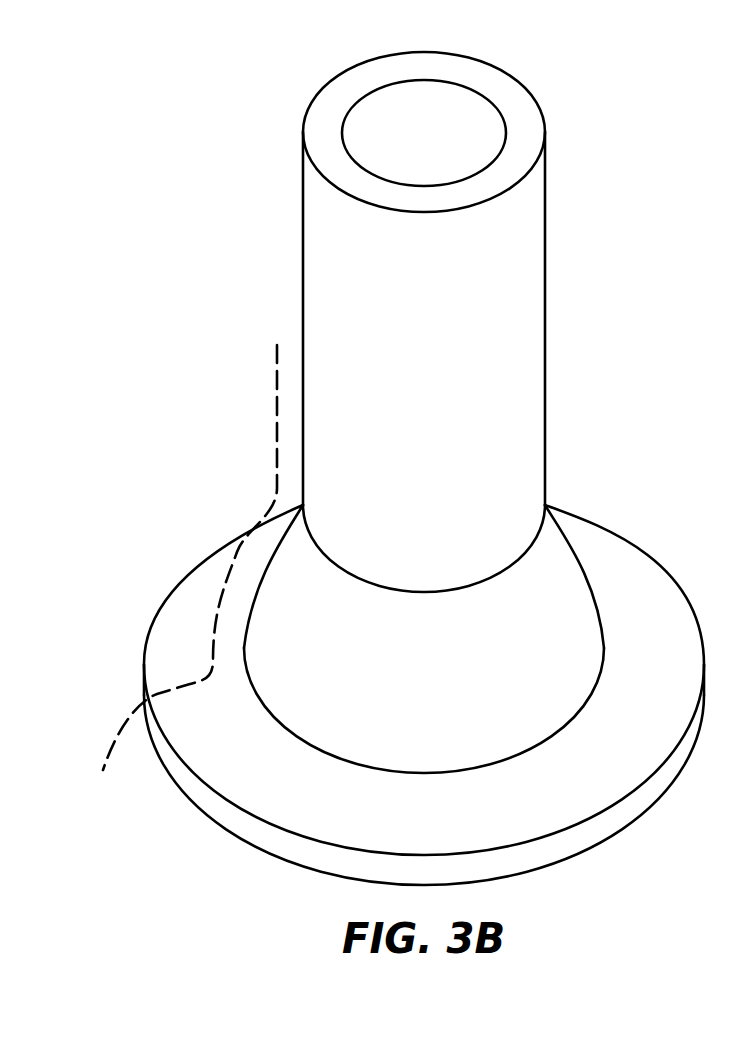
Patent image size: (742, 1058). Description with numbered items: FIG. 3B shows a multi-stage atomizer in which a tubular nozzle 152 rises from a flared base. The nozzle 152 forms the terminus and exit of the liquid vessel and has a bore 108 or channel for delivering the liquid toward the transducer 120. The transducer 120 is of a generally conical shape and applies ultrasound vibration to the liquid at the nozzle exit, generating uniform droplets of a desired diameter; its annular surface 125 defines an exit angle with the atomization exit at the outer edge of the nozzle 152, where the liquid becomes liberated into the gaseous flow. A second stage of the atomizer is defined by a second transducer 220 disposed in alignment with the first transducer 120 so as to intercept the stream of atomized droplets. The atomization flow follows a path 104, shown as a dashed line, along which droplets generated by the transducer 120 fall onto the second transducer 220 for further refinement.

The bore 108 is at (453, 107).
The nozzle 152 is at (302, 240).
The path 104 is at (277, 417).
The annular surface 125 is at (596, 588).
The transducer 120 is at (441, 721).
The second transducer 220 is at (210, 804).